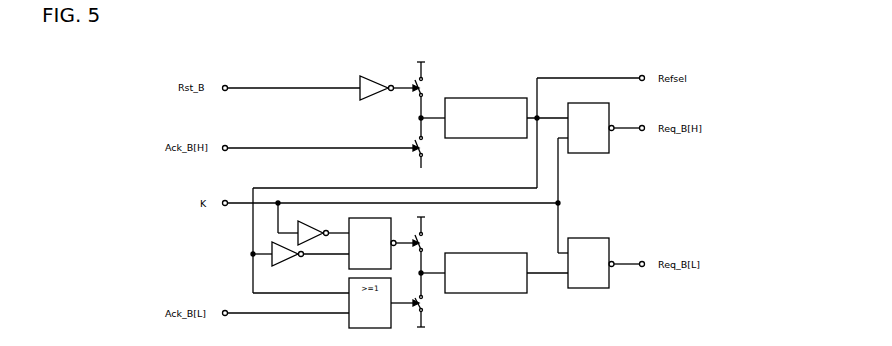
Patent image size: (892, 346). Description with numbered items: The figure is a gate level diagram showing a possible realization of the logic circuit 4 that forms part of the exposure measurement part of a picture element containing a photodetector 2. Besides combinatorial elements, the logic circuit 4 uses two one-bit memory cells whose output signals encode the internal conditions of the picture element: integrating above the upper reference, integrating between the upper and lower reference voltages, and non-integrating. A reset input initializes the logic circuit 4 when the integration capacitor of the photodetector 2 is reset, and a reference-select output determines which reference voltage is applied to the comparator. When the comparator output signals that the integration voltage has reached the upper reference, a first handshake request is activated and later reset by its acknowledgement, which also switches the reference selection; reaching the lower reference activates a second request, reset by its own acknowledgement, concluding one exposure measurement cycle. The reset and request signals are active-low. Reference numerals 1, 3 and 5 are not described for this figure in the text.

The 1-bit memory 1 is at (410, 133).
The photodetector 2 is at (506, 273).
The AND gate for Req_B[H] 3 is at (604, 128).
The logic circuit 4 is at (384, 243).
The AND gate for Req_B[L] 5 is at (604, 263).